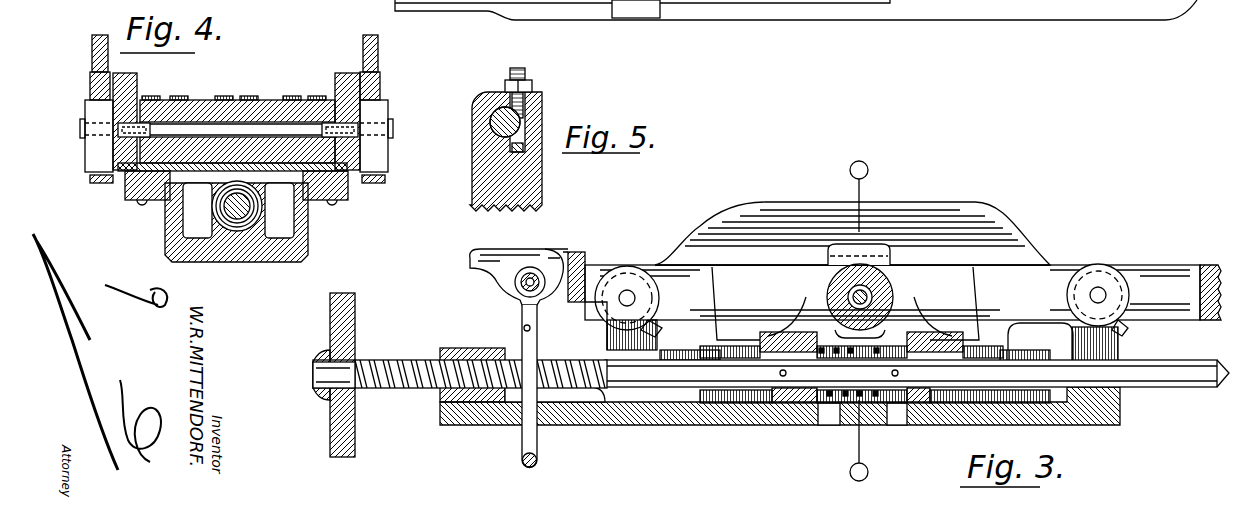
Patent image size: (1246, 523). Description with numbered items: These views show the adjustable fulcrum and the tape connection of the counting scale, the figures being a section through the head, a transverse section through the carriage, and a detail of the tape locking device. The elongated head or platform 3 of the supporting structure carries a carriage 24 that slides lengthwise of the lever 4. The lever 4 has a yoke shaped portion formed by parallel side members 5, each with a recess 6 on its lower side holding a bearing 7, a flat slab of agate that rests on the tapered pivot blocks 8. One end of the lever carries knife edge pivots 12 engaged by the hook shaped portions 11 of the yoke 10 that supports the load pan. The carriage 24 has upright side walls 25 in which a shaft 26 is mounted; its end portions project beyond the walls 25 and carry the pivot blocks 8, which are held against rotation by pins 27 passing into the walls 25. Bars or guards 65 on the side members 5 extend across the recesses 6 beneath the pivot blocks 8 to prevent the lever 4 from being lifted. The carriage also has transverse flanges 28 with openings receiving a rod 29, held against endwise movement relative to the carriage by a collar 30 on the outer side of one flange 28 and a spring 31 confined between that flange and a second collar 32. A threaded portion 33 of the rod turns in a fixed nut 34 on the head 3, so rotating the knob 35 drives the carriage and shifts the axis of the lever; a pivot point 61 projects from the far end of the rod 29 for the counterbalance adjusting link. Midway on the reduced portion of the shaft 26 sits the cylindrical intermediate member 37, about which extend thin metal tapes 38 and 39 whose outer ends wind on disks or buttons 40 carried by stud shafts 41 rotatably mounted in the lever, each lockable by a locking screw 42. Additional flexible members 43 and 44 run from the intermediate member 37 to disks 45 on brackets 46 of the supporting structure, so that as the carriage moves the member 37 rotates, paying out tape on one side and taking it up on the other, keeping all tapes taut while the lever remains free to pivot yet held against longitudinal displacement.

In FIG. 4, the head or platform 3 is at (308, 252).
In FIG. 3, the head or platform 3 is at (636, 425).
In FIG. 3, the lever 4 is at (859, 321).
In FIG. 4, the side members 5 is at (378, 48).
In FIG. 3, the side members 5 is at (946, 205).
In FIG. 3, the recess 6 is at (975, 297).
In FIG. 4, the bearing 7 is at (382, 86).
In FIG. 3, the bearing 7 is at (795, 264).
In FIG. 4, the pivot blocks 8 is at (388, 108).
In FIG. 3, the yoke 10 is at (524, 328).
In FIG. 3, the hook shaped portions 11 is at (545, 262).
In FIG. 3, the knife edge pivots 12 is at (522, 286).
In FIG. 4, the carriage 24 is at (346, 190).
In FIG. 3, the carriage 24 is at (845, 303).
In FIG. 4, the side walls 25 is at (338, 80).
In FIG. 3, the side walls 25 is at (870, 248).
In FIG. 4, the shaft 26 is at (143, 127).
In FIG. 3, the shaft 26 is at (852, 299).
In FIG. 4, the pins 27 is at (120, 172).
In FIG. 4, the transverse members or flanges 28 is at (258, 220).
In FIG. 3, the transverse members or flanges 28 is at (914, 398).
In FIG. 4, the rod 29 is at (237, 222).
In FIG. 3, the rod 29 is at (748, 378).
In FIG. 3, the collar 30 is at (778, 397).
In FIG. 4, the spring 31 is at (248, 218).
In FIG. 3, the spring 31 is at (845, 395).
In FIG. 4, the second collar 32 is at (230, 222).
In FIG. 3, the second collar 32 is at (893, 398).
In FIG. 3, the threaded portion 33 is at (568, 388).
In FIG. 3, the fixed nut 34 is at (465, 350).
In FIG. 3, the knob 35 is at (356, 332).
In FIG. 4, the intermediate member 37 is at (237, 131).
In FIG. 3, the intermediate member 37 is at (893, 292).
In FIG. 4, the flexible connecting member or tape 38 is at (188, 98).
In FIG. 3, the flexible connecting member or tape 38 is at (1000, 266).
In FIG. 4, the flexible connecting member or tape 39 is at (160, 97).
In FIG. 3, the disk or button 40 is at (1088, 295).
In FIG. 5, the stud shaft 41 is at (498, 117).
In FIG. 3, the stud shaft 41 is at (627, 290).
In FIG. 5, the locking screw 42 is at (527, 72).
In FIG. 4, the additional flexible member 43 is at (250, 98).
In FIG. 4, the additional flexible member 44 is at (225, 93).
In FIG. 3, the additional flexible member 44 is at (758, 266).
In FIG. 3, the disks or buttons 45 is at (642, 297).
In FIG. 5, the brackets 46 is at (506, 151).
In FIG. 3, the brackets 46 is at (612, 340).
In FIG. 3, the pivot point 61 is at (1215, 383).
In FIG. 4, the bars or guards 65 is at (374, 185).
In FIG. 3, the bars or guards 65 is at (730, 346).